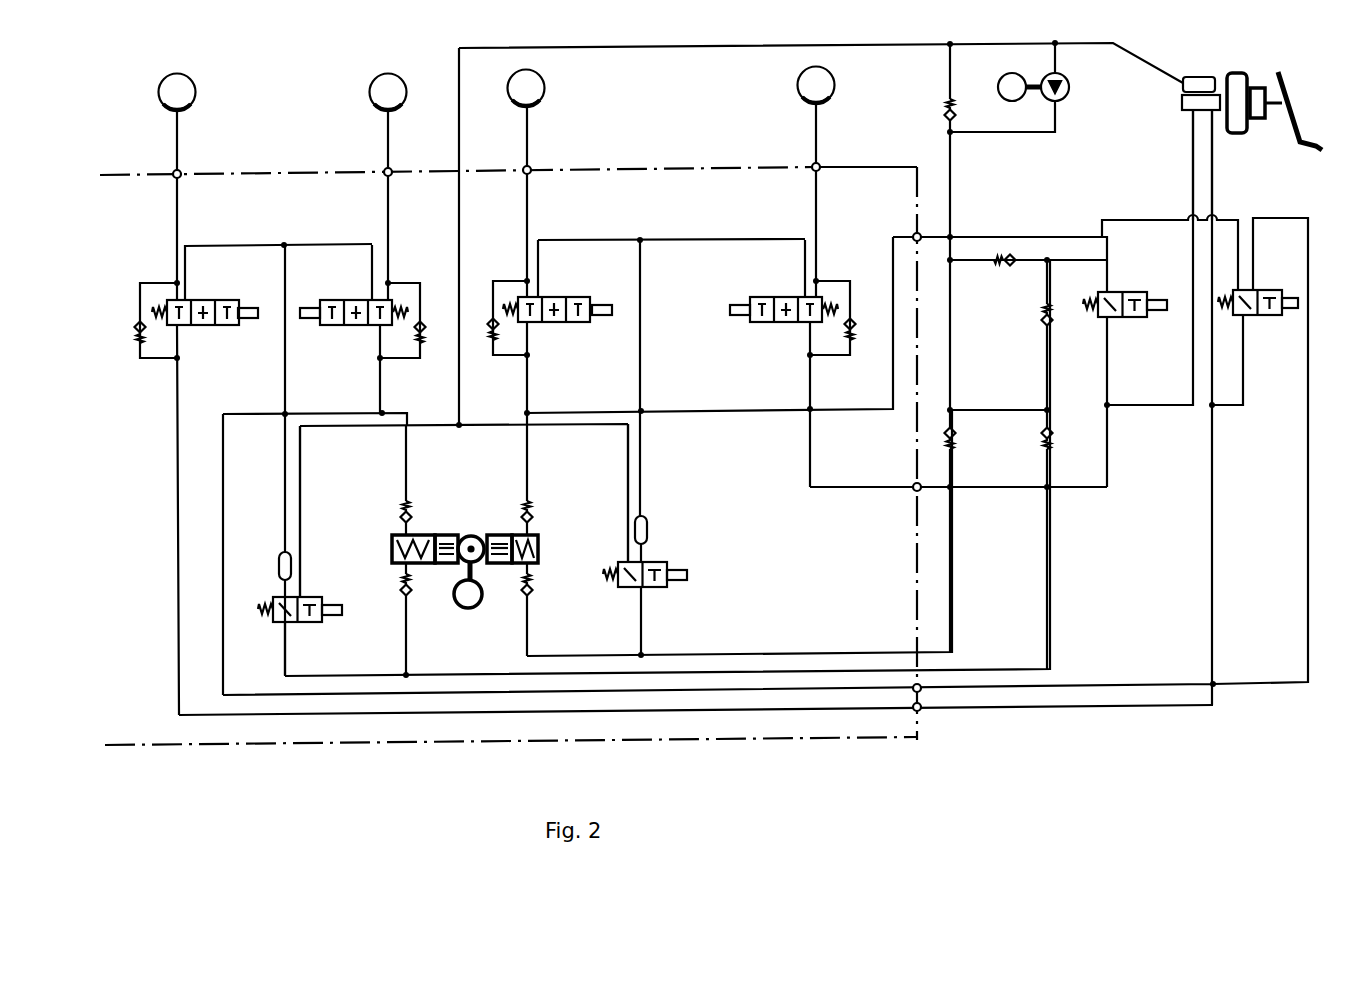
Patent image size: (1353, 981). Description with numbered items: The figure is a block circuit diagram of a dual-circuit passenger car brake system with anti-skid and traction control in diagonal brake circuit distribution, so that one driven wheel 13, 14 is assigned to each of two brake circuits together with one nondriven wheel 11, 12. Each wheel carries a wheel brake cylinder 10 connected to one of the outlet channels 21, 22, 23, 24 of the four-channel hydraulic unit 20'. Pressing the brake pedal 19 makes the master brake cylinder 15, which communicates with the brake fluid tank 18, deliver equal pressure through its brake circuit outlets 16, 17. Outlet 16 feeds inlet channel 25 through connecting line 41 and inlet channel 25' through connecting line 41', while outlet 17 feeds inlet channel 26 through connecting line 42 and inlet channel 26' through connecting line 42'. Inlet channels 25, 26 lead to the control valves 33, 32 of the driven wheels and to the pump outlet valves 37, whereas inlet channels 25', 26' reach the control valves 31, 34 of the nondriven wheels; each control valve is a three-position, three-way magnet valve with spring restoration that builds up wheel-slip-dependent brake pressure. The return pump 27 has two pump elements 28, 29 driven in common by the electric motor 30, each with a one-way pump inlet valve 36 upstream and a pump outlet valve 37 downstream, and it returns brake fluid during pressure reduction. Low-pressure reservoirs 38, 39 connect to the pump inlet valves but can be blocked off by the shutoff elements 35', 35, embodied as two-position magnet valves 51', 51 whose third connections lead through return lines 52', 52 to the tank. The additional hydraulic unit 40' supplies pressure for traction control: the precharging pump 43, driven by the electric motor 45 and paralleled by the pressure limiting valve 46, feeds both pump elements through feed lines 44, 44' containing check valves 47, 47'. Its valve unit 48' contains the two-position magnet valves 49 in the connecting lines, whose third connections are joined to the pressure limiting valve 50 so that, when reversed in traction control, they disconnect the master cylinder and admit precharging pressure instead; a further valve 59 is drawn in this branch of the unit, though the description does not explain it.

The wheel brake cylinder 10 is at (190, 108).
The nondriven wheel 11 is at (196, 85).
The nondriven wheel 12 is at (833, 80).
The driven wheel 13 is at (543, 80).
The driven wheel 14 is at (406, 85).
The master brake cylinder 15 is at (1181, 103).
The brake circuit outlet 16 is at (1213, 112).
The brake circuit outlet 17 is at (1190, 112).
The brake fluid tank 18 is at (1205, 77).
The brake pedal 19 is at (1290, 100).
The four-channel hydraulic unit 20' is at (508, 409).
The outlet channel 21 is at (181, 173).
The outlet channel 22 is at (392, 171).
The outlet channel 23 is at (531, 168).
The outlet channel 24 is at (820, 165).
The inlet channel 25 is at (893, 659).
The inlet channel 25' is at (951, 723).
The inlet channel 26 is at (892, 207).
The inlet channel 26' is at (958, 505).
The return pump 27 is at (470, 534).
The pump element 28 is at (445, 534).
The pump element 29 is at (500, 532).
The electric motor 30 is at (468, 609).
The control valve 31 is at (215, 326).
The control valve 32 is at (348, 326).
The control valve 33 is at (565, 323).
The control valve 34 is at (786, 323).
The shutoff element 35 is at (688, 530).
The shutoff element 35' is at (314, 565).
The pump inlet valve 36 is at (406, 594).
The pump outlet valve 37 is at (400, 514).
The low-pressure reservoir 38 is at (278, 572).
The low-pressure reservoir 39 is at (649, 527).
The additional hydraulic unit 40' is at (1002, 143).
The connecting line 41 is at (1259, 452).
The connecting line 41' is at (718, 407).
The connecting line 42 is at (1065, 231).
The connecting line 42' is at (1137, 425).
The precharging pump 43 is at (1070, 85).
The feed line 44 is at (781, 533).
The feed line 44' is at (709, 468).
The electric motor 45 is at (1000, 94).
The pressure limiting valve 46 is at (946, 116).
The check valve 47 is at (996, 456).
The check valve 47' is at (1076, 538).
The valve unit 48' is at (1175, 286).
The 3/2-way magnet valve 49 is at (1130, 292).
The pressure limiting valve 50 is at (1005, 266).
The 3/2-way magnet valve 51 is at (684, 622).
The 3/2-way magnet valve 51' is at (266, 656).
The return line 52 is at (593, 493).
The return line 52' is at (338, 511).
The pressure relief valve 59 is at (1045, 328).